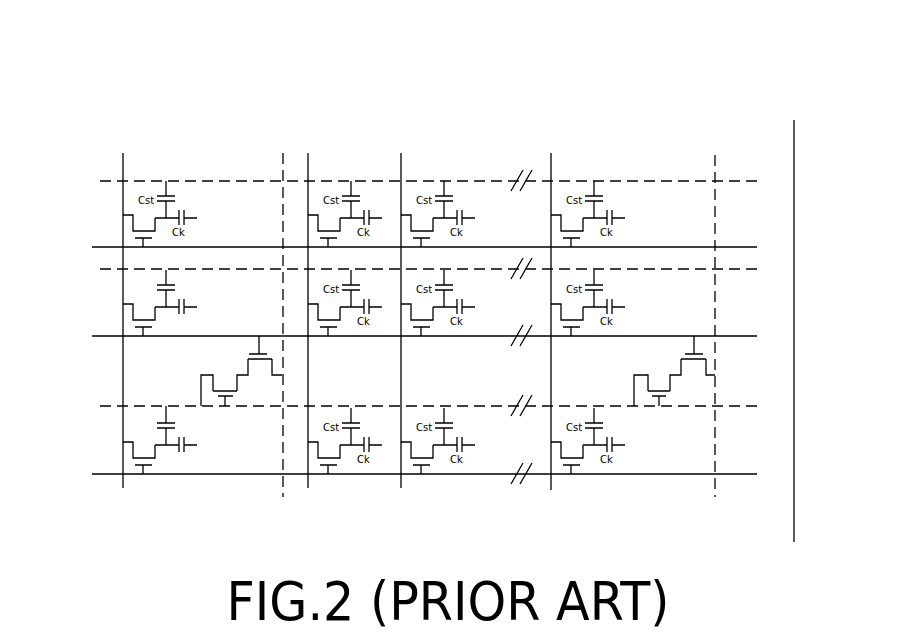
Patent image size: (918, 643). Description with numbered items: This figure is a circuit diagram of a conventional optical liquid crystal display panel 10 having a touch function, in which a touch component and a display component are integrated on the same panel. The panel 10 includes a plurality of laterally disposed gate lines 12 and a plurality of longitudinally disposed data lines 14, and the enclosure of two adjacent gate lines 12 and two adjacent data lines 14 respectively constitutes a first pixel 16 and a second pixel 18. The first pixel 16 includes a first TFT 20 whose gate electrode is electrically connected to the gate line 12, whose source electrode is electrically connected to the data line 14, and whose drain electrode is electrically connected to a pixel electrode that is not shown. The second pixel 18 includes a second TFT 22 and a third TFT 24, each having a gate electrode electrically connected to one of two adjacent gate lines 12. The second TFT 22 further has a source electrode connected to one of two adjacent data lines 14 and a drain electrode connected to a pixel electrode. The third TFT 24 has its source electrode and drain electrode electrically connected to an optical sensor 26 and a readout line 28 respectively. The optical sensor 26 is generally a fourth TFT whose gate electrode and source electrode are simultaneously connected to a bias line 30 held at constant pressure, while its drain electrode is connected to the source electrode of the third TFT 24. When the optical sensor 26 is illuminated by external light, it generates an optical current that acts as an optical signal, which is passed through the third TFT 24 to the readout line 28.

The optical liquid crystal display panel 10 is at (115, 93).
The gate lines 12 is at (407, 359).
The data lines 14 is at (341, 309).
The first pixel 16 is at (182, 286).
The second pixel 18 is at (150, 382).
The first TFT 20 is at (165, 325).
The second TFT 22 is at (147, 474).
The third TFT 24 is at (258, 350).
The optical sensor 26 is at (225, 406).
The readout line 28 is at (496, 341).
The bias line 30 is at (443, 296).